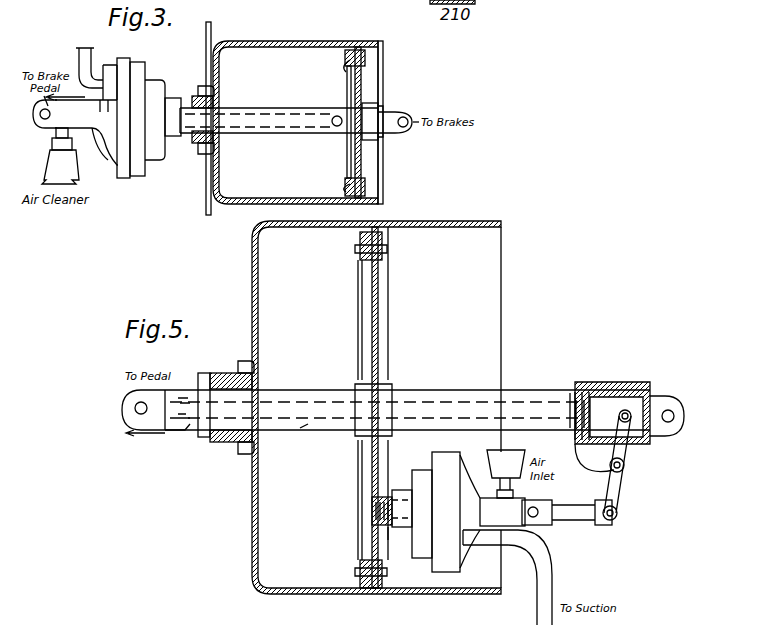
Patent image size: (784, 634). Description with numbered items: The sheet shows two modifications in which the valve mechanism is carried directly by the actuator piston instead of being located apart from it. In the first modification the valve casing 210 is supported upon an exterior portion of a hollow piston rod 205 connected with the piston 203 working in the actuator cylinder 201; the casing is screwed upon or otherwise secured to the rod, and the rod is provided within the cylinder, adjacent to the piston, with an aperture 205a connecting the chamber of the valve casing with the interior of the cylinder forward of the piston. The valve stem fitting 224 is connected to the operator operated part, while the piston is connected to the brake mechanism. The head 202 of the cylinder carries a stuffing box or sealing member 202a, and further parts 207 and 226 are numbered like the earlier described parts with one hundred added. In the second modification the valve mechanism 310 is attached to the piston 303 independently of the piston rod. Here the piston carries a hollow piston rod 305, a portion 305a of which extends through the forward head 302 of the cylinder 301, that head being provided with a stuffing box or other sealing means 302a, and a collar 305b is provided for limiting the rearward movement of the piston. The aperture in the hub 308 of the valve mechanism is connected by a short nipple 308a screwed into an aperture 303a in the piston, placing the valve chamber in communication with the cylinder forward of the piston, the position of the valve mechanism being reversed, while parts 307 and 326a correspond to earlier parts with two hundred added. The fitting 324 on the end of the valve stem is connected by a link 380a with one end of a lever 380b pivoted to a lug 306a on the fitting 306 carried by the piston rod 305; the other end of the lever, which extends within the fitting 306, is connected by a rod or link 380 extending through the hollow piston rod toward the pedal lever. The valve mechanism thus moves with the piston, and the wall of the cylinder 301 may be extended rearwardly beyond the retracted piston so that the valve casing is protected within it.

In FIG. 3, the actuator cylinder 201 is at (280, 41).
In FIG. 3, the head of the cylinder 202 is at (207, 70).
In FIG. 3, the stuffing box or sealing member 202a is at (206, 148).
In FIG. 3, the piston 203 is at (363, 167).
In FIG. 3, the hollow piston rod 205 is at (266, 133).
In FIG. 3, the aperture 205a is at (333, 117).
In FIG. 3, the clevis 207 is at (403, 130).
In FIG. 3, the valve casing 210 is at (156, 152).
In FIG. 3, the valve stem fitting 224 is at (49, 156).
In FIG. 3, the suction pipe 226 is at (79, 52).
In FIG. 5, the cylinder 301 is at (503, 227).
In FIG. 5, the forward head of the cylinder 302 is at (252, 272).
In FIG. 5, the stuffing box or sealing means 302a is at (258, 445).
In FIG. 5, the piston 303 is at (379, 306).
In FIG. 5, the aperture in the piston 303a is at (372, 510).
In FIG. 5, the hollow piston rod 305 is at (516, 396).
In FIG. 5, the portion of the piston rod 305a is at (306, 430).
In FIG. 5, the collar 305b is at (205, 375).
In FIG. 5, the fitting 306 is at (621, 392).
In FIG. 5, the lug 306a is at (588, 470).
In FIG. 5, the clevis 307 is at (674, 412).
In FIG. 5, the hub 308 is at (400, 490).
In FIG. 5, the short nipple 308a is at (390, 542).
In FIG. 5, the valve mechanism 310 is at (433, 462).
In FIG. 5, the fitting on the end of the valve stem 324 is at (536, 520).
In FIG. 5, the suction pipe 326a is at (549, 586).
In FIG. 5, the rod or link 380 is at (598, 408).
In FIG. 5, the link 380a is at (600, 548).
In FIG. 5, the lever 380b is at (620, 506).